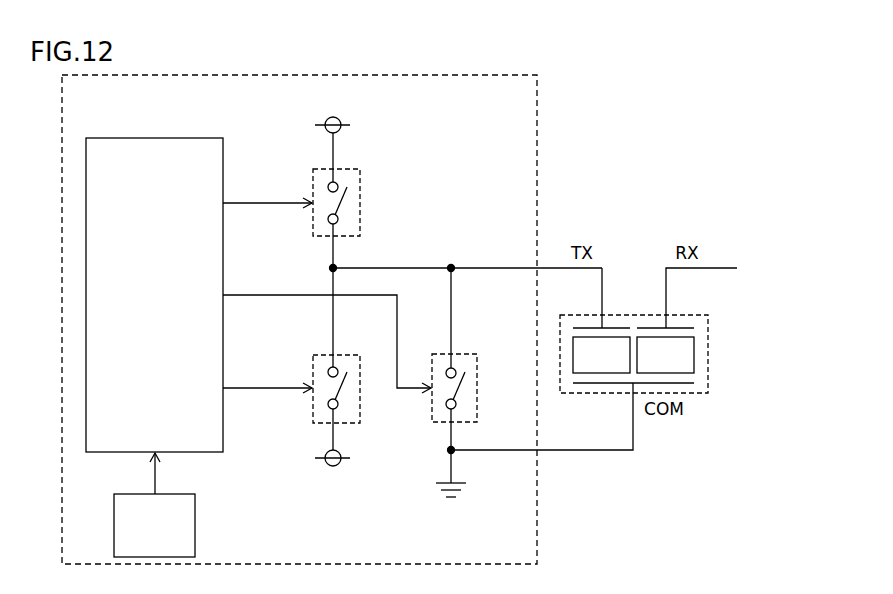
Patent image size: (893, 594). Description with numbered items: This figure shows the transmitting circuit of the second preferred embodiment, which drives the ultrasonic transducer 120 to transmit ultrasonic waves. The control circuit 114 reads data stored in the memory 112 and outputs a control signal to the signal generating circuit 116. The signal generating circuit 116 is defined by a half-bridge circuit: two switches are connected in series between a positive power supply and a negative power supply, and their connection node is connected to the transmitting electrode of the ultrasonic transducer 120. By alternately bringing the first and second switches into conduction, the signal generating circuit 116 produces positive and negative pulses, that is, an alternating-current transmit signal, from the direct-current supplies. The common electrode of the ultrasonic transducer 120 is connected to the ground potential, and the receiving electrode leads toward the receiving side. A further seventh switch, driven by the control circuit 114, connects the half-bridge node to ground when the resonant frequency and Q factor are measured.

The memory 112 is at (170, 492).
The control circuit 114 is at (172, 137).
The signal generating circuit 116 is at (385, 151).
The ultrasonic transducer 120 is at (708, 352).